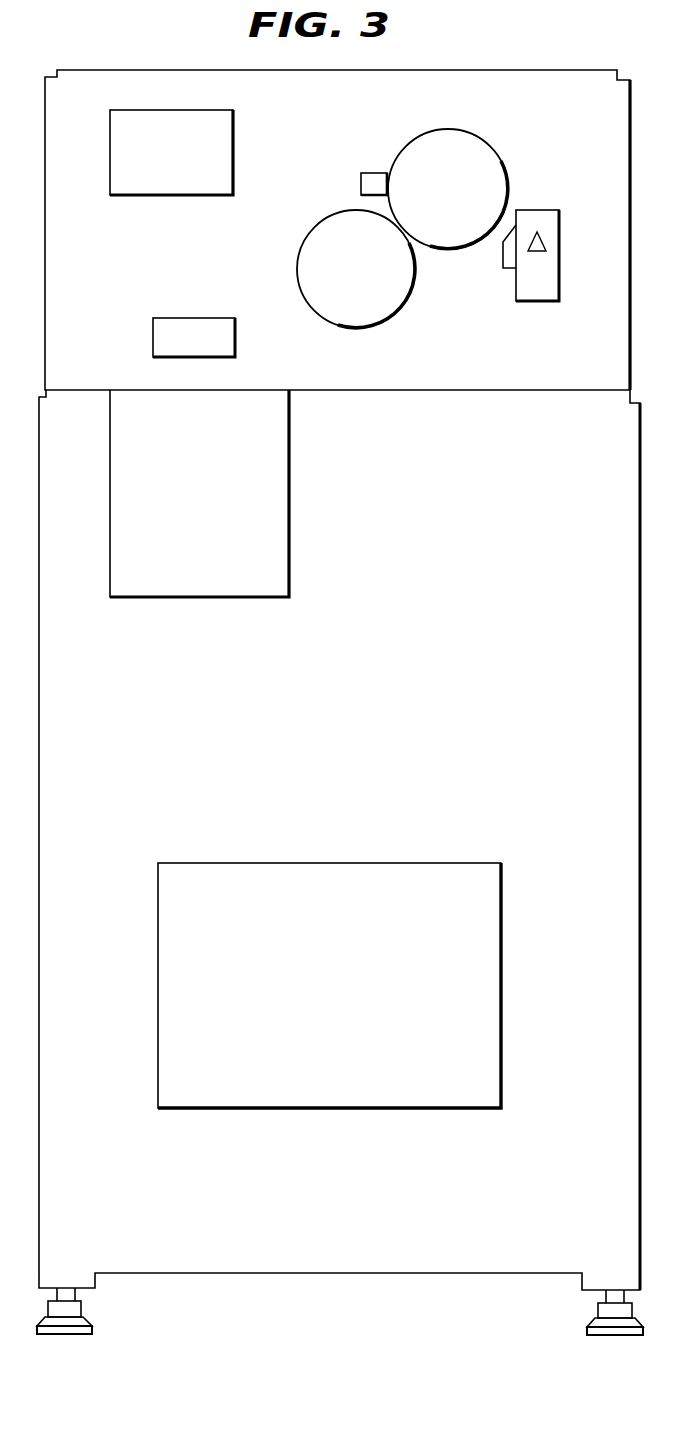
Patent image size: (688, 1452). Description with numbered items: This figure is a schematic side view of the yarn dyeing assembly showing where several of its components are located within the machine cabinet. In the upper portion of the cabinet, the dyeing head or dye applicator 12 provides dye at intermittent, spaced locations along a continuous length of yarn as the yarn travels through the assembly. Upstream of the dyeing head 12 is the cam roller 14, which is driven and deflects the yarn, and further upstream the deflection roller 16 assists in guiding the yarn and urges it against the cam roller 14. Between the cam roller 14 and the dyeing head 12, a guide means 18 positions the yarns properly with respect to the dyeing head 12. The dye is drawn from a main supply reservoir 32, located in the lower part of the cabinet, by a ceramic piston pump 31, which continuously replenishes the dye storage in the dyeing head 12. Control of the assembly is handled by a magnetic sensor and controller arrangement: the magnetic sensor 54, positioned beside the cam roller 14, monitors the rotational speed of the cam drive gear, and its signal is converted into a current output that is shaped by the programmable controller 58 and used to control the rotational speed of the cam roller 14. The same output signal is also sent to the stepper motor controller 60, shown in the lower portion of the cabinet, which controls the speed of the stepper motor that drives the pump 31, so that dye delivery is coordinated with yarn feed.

The dyeing head 12 is at (540, 244).
The cam roller 14 is at (490, 172).
The deflection roller 16 is at (380, 313).
The guide means 18 is at (503, 258).
The ceramic piston pump 31 is at (158, 333).
The main supply reservoir 32 is at (283, 532).
The magnetic sensor 54 is at (362, 183).
The programmable controller 58 is at (228, 143).
The stepper motor controller 60 is at (490, 1002).